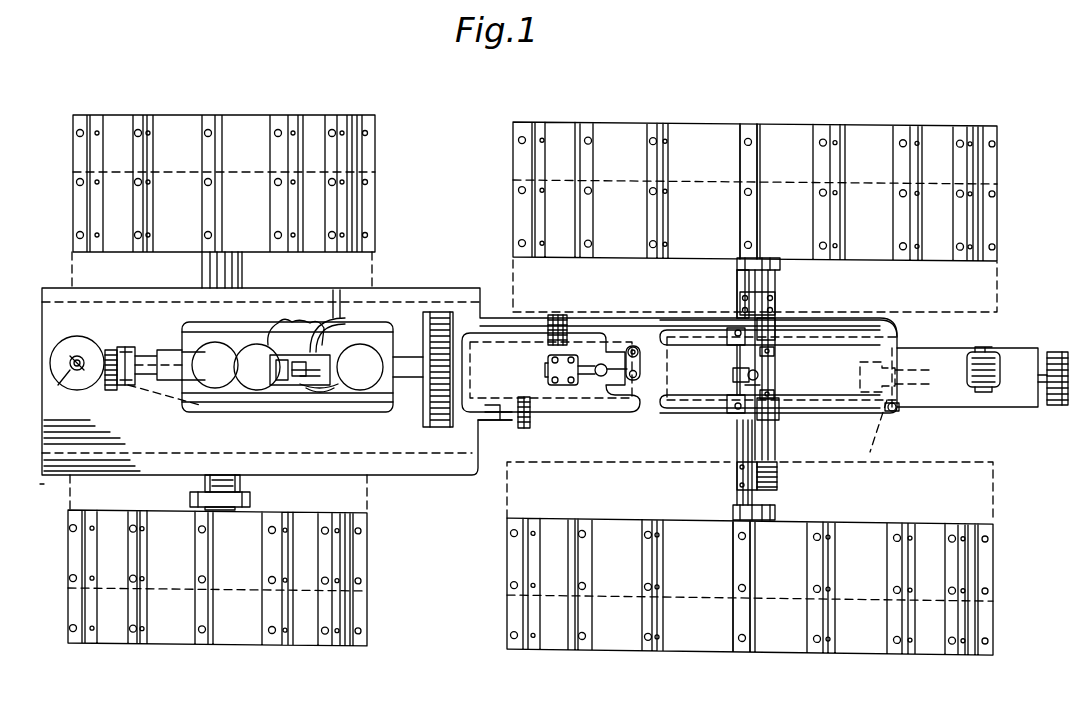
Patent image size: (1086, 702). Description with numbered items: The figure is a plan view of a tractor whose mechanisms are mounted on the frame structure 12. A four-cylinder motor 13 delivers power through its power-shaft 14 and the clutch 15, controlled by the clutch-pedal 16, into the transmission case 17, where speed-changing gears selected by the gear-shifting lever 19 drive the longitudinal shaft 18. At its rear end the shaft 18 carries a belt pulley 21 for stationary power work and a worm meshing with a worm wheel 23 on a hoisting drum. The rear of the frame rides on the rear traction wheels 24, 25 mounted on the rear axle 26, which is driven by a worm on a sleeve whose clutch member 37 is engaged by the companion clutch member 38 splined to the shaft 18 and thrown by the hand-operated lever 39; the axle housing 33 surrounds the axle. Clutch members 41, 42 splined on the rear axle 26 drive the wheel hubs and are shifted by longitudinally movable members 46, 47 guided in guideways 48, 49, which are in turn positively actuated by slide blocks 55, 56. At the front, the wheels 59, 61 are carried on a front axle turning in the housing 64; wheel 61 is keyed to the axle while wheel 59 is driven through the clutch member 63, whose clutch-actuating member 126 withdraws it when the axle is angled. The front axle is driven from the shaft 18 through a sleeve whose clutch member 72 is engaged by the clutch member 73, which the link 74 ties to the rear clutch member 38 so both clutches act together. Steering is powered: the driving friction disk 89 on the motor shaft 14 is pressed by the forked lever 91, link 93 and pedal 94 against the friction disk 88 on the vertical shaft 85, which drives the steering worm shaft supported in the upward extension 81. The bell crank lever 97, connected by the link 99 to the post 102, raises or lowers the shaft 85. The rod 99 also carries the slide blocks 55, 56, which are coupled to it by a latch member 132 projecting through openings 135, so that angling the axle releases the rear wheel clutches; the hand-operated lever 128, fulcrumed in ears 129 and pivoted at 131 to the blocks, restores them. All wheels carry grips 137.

The frame structure 12 is at (42, 409).
The motor 13 is at (232, 372).
The power-shaft 14 is at (147, 348).
The clutch 15 is at (433, 428).
The clutch-pedal 16 is at (557, 314).
The transmission case 17 is at (596, 400).
The shaft 18 is at (336, 392).
The gear-shifting lever 19 is at (586, 395).
The belt pulley 21 is at (1056, 406).
The worm wheel 23 is at (958, 408).
The rear traction wheel 24 is at (990, 350).
The rear traction wheel 25 is at (936, 128).
The rear axle 26 is at (778, 288).
The axle housing 33 is at (778, 480).
The clutch member 37 is at (858, 362).
The clutch member 38 is at (872, 425).
The hand-operated lever 39 is at (890, 412).
The clutch member 41 is at (733, 514).
The clutch member 42 is at (778, 262).
The longitudinally movable member 46 is at (737, 450).
The longitudinally movable member 47 is at (737, 283).
The guideway 48 is at (737, 480).
The guideway 49 is at (776, 305).
The slide block 55 is at (778, 422).
The slide block 56 is at (730, 320).
The front wheel 59 is at (166, 645).
The front wheel 61 is at (176, 120).
The clutch member 63 is at (234, 512).
The housing 64 is at (242, 270).
The clutch member 72 is at (288, 386).
The clutch member 73 is at (308, 386).
The link 74 is at (335, 296).
The upward extension 81 is at (278, 386).
The vertical shaft 85 is at (75, 378).
The friction disk 88 is at (50, 366).
The driving friction disk 89 is at (109, 390).
The forked lever 91 is at (128, 386).
The link 93 is at (162, 398).
The pedal 94 is at (523, 428).
The bell crank lever 97 is at (87, 350).
The link 99 is at (675, 422).
The post 102 is at (633, 346).
The clutch-actuating member 126 is at (240, 481).
The hand-operated lever 128 is at (759, 376).
The ear 129 is at (774, 352).
The pivotal connection 131 is at (768, 440).
The latch member 132 is at (733, 386).
The opening 135 is at (733, 340).
The grip 137 is at (740, 130).